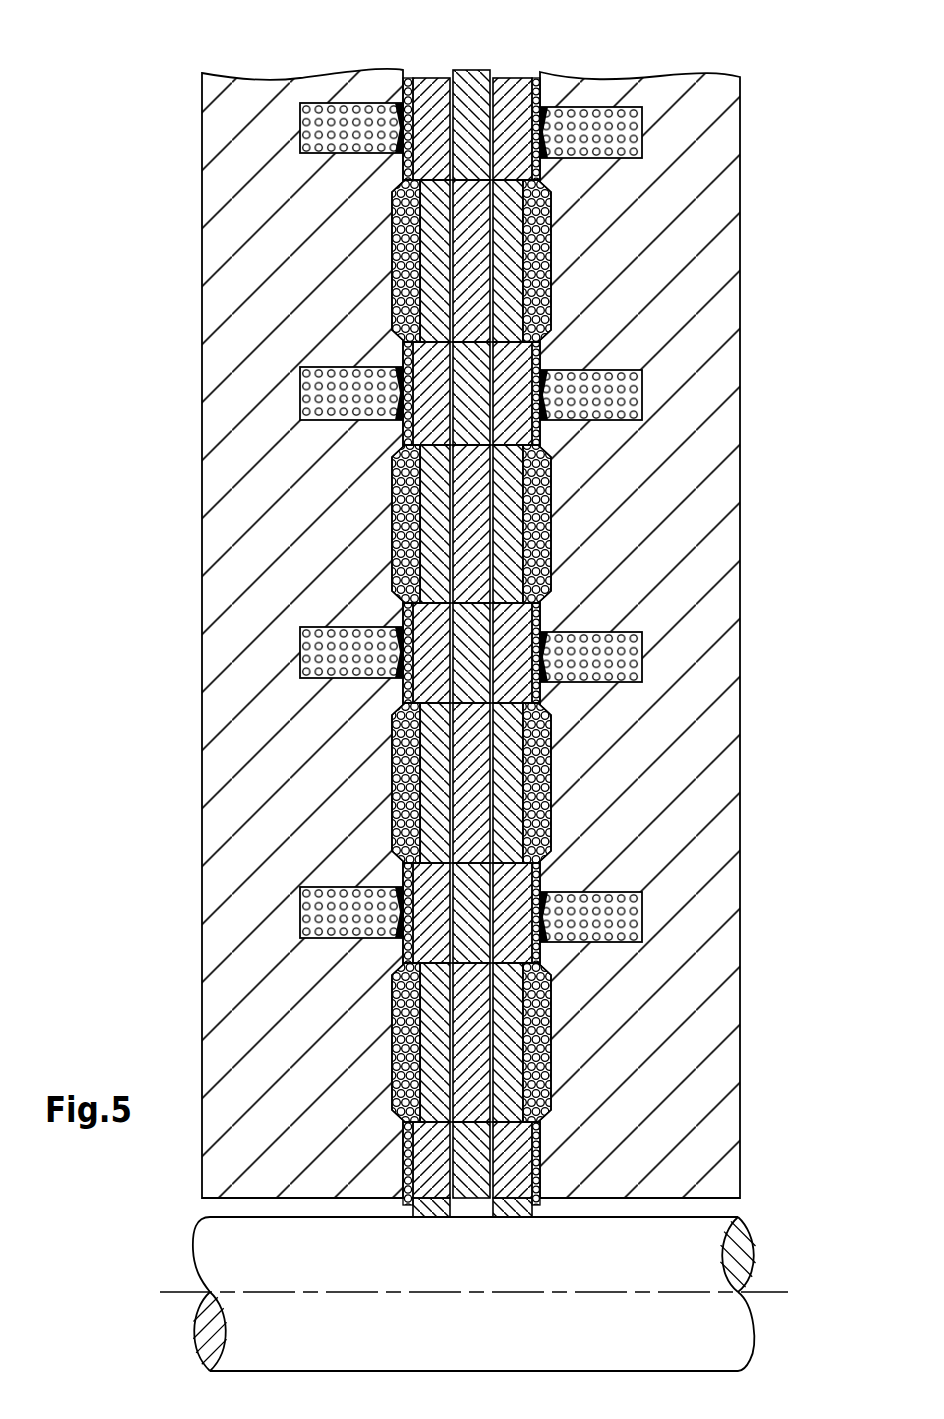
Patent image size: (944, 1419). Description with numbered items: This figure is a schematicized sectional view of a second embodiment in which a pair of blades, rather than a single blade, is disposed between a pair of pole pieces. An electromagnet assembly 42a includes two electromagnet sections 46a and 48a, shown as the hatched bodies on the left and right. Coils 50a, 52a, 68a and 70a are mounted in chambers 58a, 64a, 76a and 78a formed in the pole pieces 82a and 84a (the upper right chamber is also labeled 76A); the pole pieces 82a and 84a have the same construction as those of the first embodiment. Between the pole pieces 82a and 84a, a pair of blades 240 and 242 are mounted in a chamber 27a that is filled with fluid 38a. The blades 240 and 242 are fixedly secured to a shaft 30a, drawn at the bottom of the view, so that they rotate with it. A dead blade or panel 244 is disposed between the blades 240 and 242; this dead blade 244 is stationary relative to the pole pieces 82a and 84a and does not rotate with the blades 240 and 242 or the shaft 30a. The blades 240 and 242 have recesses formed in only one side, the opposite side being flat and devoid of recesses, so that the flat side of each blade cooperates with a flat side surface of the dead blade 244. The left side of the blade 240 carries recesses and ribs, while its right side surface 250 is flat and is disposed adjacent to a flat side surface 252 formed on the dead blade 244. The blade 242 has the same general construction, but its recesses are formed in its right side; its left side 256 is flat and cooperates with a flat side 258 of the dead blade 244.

The shaft 30a is at (697, 1257).
The electromagnet assembly 42a is at (454, 633).
The electromagnet section 46a is at (239, 633).
The electromagnet section 48a is at (678, 635).
The coil 50a is at (259, 230).
The coil 52a is at (259, 782).
The chamber 58a is at (325, 103).
The chamber 64a is at (300, 642).
The coil 68a is at (680, 221).
The coil 70a is at (678, 760).
The chamber 76A is at (641, 110).
The chamber 76a is at (642, 388).
The chamber 78a is at (644, 644).
The pole piece 82a is at (260, 521).
The pole piece 84a is at (680, 516).
The chamber 27a is at (390, 289).
The fluid 38a is at (390, 541).
The blade 240 is at (436, 70).
The dead blade 244 is at (468, 78).
The blade 242 is at (523, 72).
The flat side surface 250 is at (410, 232).
The flat side surface 252 is at (458, 214).
The flat side 256 is at (530, 272).
The flat side 258 is at (546, 254).